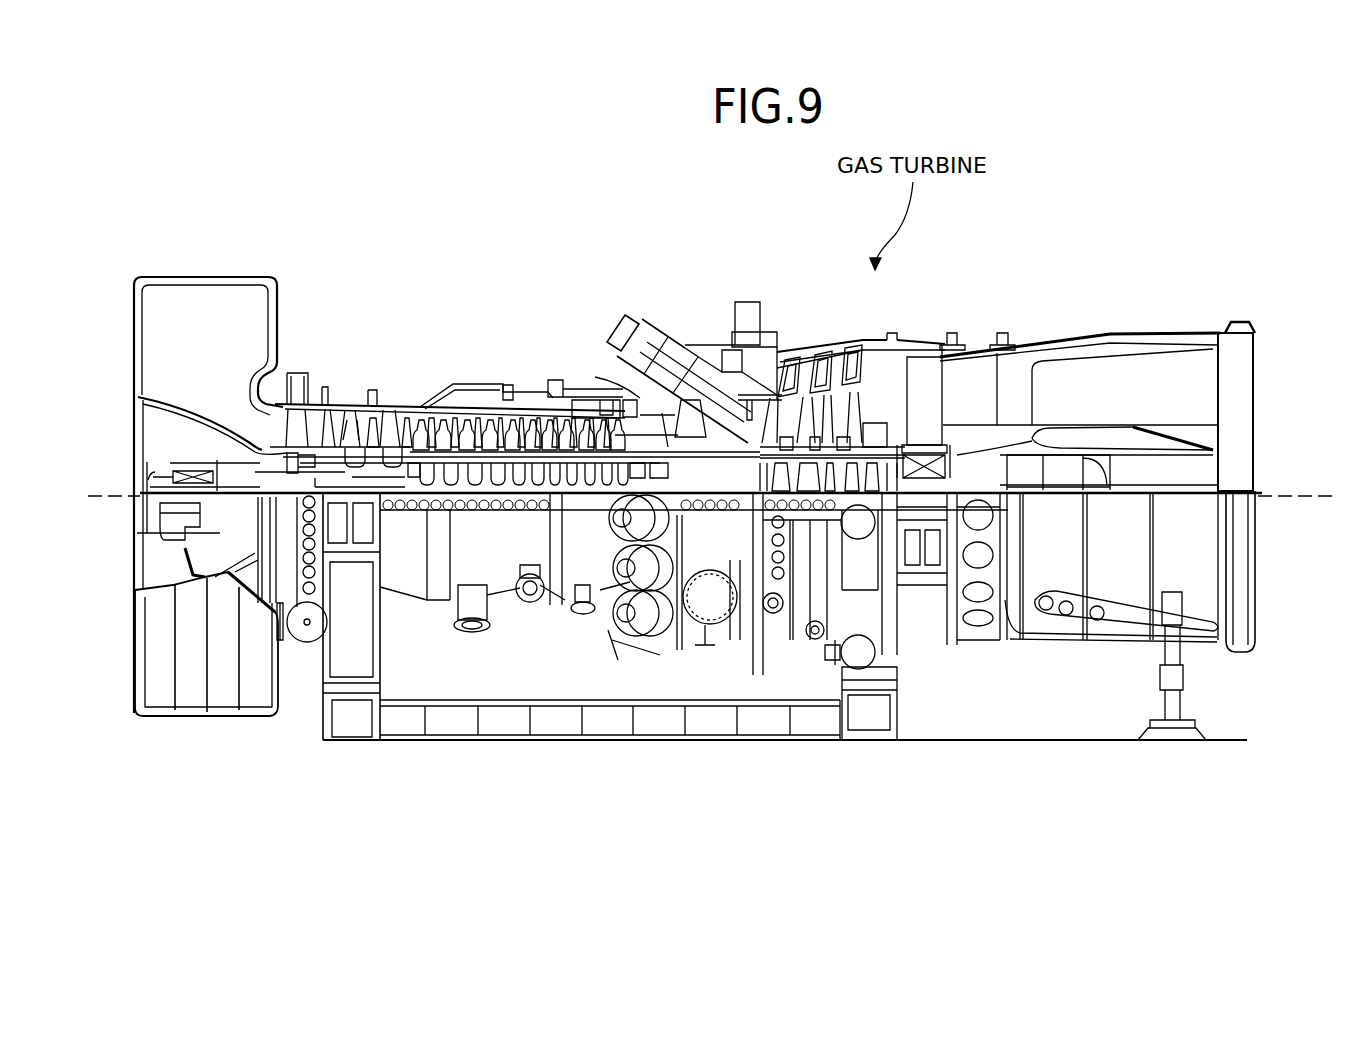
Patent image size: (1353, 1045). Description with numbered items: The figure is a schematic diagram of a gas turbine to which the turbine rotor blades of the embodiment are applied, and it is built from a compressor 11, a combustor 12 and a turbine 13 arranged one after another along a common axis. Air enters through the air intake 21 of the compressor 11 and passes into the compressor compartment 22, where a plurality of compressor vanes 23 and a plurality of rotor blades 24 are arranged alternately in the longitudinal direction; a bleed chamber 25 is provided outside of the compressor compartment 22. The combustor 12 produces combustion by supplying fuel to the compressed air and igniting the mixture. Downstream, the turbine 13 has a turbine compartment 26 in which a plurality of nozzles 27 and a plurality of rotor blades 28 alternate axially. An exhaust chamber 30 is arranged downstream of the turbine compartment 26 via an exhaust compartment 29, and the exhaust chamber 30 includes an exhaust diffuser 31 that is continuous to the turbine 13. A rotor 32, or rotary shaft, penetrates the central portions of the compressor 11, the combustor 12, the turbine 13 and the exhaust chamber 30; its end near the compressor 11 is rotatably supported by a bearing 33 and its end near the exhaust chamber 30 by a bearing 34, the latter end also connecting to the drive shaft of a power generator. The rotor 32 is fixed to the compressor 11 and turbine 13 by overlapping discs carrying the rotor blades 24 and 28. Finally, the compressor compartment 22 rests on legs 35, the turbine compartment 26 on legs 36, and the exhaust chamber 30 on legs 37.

The compressor 11 is at (356, 346).
The combustor 12 is at (635, 303).
The turbine 13 is at (893, 318).
The air intake 21 is at (148, 338).
The compressor compartment 22 is at (343, 392).
The compressor vanes 23 is at (353, 412).
The rotor blades 24 is at (418, 410).
The bleed chamber 25 is at (480, 398).
The turbine compartment 26 is at (833, 350).
The nozzles 27 is at (778, 372).
The rotor blades 28 is at (743, 343).
The exhaust compartment 29 is at (923, 341).
The exhaust chamber 30 is at (1182, 337).
The exhaust diffuser 31 is at (970, 357).
The rotor 32 is at (632, 405).
The bearing 33 is at (150, 480).
The bearing 34 is at (1133, 435).
The legs 35 is at (328, 671).
The legs 36 is at (880, 655).
The legs 37 is at (1182, 680).